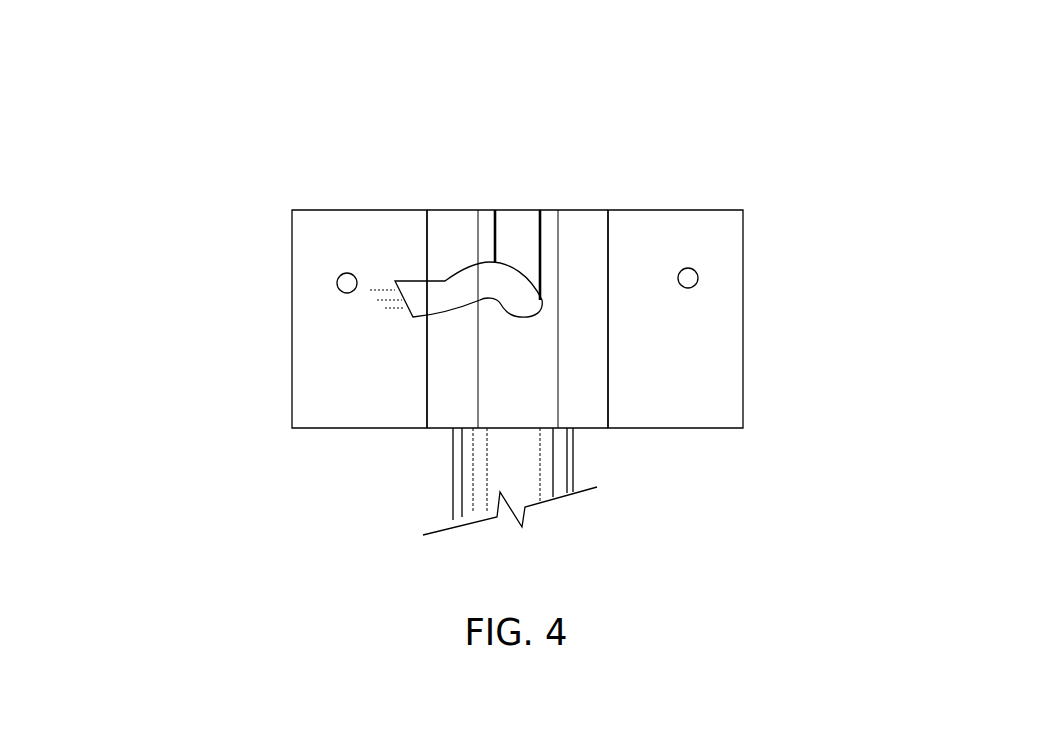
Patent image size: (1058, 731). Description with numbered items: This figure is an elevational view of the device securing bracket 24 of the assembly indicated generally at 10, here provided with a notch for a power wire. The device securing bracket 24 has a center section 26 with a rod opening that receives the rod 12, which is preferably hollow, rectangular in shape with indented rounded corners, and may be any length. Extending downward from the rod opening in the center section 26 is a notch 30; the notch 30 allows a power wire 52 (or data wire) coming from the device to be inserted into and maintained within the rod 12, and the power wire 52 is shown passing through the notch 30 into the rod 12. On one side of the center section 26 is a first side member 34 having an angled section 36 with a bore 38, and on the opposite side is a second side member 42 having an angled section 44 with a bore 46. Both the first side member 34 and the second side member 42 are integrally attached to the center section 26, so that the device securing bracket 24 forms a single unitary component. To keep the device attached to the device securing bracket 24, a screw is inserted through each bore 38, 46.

The assembly 10 is at (158, 73).
The device securing bracket 24 is at (787, 220).
The angled section 36 is at (452, 248).
The notch 30 is at (517, 248).
The center section 26 is at (550, 247).
The angled section 44 is at (583, 248).
The bore 38 is at (345, 283).
The bore 46 is at (690, 277).
The first side member 34 is at (330, 392).
The second side member 42 is at (707, 382).
The power wire 52 is at (462, 290).
The rod 12 is at (518, 462).